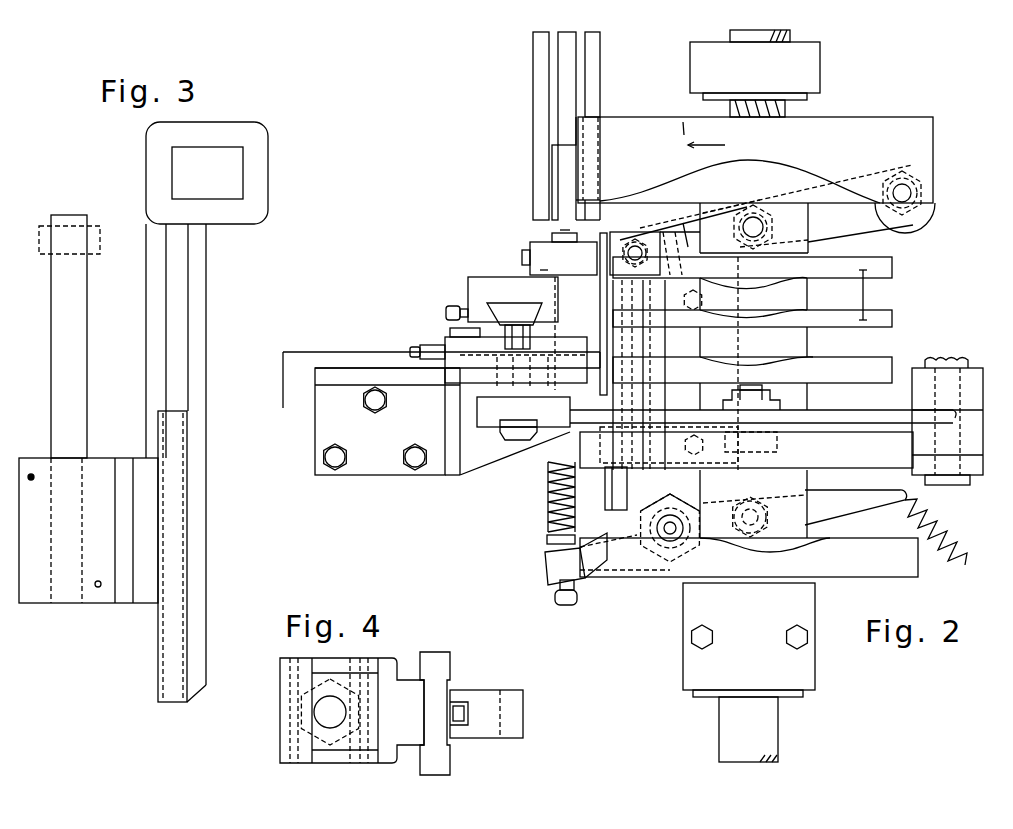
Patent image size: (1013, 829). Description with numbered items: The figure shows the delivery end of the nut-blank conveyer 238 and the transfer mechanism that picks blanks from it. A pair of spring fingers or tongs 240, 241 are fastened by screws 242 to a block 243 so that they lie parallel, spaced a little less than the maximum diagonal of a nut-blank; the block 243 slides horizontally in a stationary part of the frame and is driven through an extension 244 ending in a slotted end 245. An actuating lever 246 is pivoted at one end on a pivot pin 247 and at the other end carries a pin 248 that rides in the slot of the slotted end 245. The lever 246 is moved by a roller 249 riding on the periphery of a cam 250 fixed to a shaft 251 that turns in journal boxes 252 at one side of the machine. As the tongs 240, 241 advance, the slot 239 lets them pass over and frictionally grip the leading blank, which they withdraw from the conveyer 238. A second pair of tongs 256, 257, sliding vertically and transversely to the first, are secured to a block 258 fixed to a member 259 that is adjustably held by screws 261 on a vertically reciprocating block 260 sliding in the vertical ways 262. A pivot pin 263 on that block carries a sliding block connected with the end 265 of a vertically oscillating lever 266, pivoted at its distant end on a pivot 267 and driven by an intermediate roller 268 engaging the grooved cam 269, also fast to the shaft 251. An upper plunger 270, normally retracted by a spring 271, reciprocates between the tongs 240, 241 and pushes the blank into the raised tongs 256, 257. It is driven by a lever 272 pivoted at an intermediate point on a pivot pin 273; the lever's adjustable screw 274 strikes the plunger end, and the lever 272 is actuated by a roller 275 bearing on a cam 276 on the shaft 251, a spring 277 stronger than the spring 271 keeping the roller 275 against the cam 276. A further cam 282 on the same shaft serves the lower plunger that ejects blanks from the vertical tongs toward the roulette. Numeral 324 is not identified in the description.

In FIG. 2, the nut-blank conveyer 238 is at (533, 56).
In FIG. 2, the slot 239 is at (558, 170).
In FIG. 3, the spring finger or tong 240 is at (57, 326).
In FIG. 4, the spring finger or tong 240 is at (323, 668).
In FIG. 2, the spring finger or tong 240 is at (566, 275).
In FIG. 4, the spring finger or tong 241 is at (348, 752).
In FIG. 3, the screw 242 is at (33, 480).
In FIG. 4, the screw 242 is at (292, 672).
In FIG. 3, the block 243 is at (170, 556).
In FIG. 4, the block 243 is at (399, 715).
In FIG. 2, the block 243 is at (593, 378).
In FIG. 3, the extension 244 is at (188, 328).
In FIG. 4, the extension 244 is at (448, 676).
In FIG. 2, the extension 244 is at (606, 477).
In FIG. 3, the slotted end 245 is at (262, 206).
In FIG. 4, the slotted end 245 is at (500, 692).
In FIG. 2, the slotted end 245 is at (630, 234).
In FIG. 2, the actuating lever 246 is at (686, 240).
In FIG. 2, the pivot pin 247 is at (905, 220).
In FIG. 2, the pin 248 is at (650, 258).
In FIG. 2, the roller 249 is at (775, 208).
In FIG. 2, the cam 250 is at (818, 178).
In FIG. 2, the shaft 251 is at (782, 50).
In FIG. 2, the journal box 252 is at (749, 640).
In FIG. 2, the second tong or finger 256 is at (589, 252).
In FIG. 2, the second tong or finger 257 is at (535, 258).
In FIG. 2, the block 258 is at (540, 270).
In FIG. 2, the member 259 is at (513, 333).
In FIG. 2, the vertically reciprocating block 260 is at (527, 316).
In FIG. 2, the screw 261 is at (452, 302).
In FIG. 2, the vertical ways 262 is at (448, 348).
In FIG. 2, the pivot pin 263 is at (518, 447).
In FIG. 2, the end of lever 265 is at (483, 420).
In FIG. 2, the vertically oscillating lever 266 is at (688, 415).
In FIG. 2, the pivot 267 is at (950, 368).
In FIG. 2, the roller 268 is at (777, 444).
In FIG. 2, the cam 269 is at (746, 450).
In FIG. 2, the upper plunger 270 is at (568, 296).
In FIG. 2, the spring 271 is at (548, 523).
In FIG. 2, the lever 272 is at (548, 572).
In FIG. 2, the pivot pin 273 is at (670, 522).
In FIG. 2, the adjustable screw 274 is at (565, 607).
In FIG. 2, the roller 275 is at (758, 501).
In FIG. 2, the cam 276 is at (800, 548).
In FIG. 2, the spring 277 is at (966, 556).
In FIG. 2, the cam 282 is at (865, 366).
In FIG. 2, the bar 324 is at (752, 292).